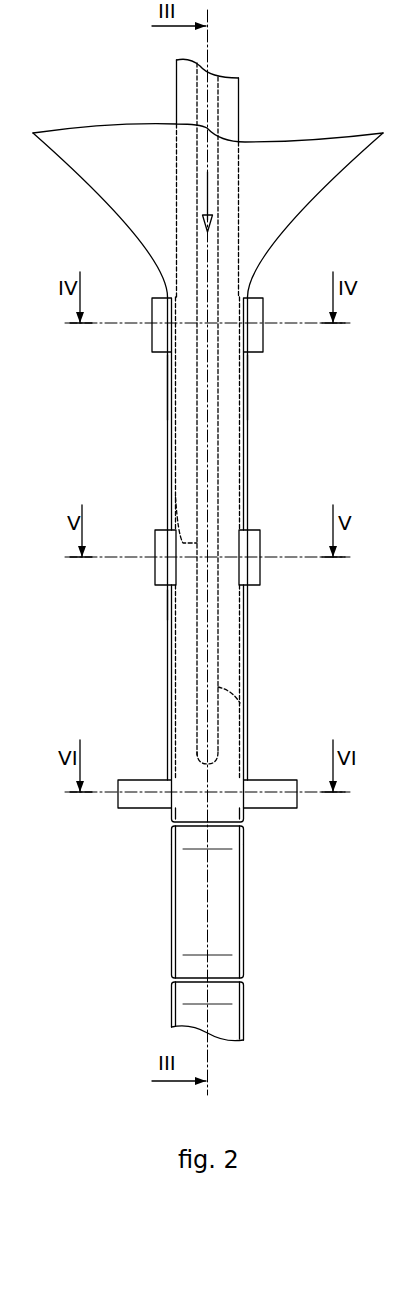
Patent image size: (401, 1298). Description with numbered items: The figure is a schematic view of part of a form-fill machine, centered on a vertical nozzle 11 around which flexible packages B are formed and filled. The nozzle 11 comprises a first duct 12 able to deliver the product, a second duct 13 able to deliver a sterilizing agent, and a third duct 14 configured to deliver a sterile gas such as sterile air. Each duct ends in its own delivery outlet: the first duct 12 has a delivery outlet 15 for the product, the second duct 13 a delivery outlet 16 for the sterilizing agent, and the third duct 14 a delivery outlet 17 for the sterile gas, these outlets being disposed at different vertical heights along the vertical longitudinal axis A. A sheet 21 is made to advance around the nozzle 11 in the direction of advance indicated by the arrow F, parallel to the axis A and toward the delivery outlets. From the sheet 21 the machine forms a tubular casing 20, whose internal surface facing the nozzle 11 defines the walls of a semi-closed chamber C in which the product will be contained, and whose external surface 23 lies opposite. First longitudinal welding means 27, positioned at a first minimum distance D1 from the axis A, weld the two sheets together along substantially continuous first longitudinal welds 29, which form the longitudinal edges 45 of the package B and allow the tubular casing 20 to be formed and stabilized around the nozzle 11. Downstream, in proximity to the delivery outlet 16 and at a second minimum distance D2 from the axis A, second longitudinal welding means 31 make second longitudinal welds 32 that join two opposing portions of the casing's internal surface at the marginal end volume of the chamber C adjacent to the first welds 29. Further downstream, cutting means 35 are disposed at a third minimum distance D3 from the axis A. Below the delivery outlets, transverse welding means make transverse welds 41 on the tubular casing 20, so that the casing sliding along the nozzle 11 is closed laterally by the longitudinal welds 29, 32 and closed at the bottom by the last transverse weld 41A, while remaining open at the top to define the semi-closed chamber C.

The nozzle 11 is at (206, 406).
The first duct 12 is at (205, 108).
The second duct 13 is at (185, 72).
The third duct 14 is at (230, 117).
The delivery outlet 15 is at (220, 752).
The delivery outlet 16 is at (175, 497).
The delivery outlet 17 is at (240, 703).
The tubular casing 20 is at (167, 608).
The sheet 21 is at (208, 210).
The external surface 23 is at (277, 215).
The first longitudinal welding means 27 is at (151, 356).
The first longitudinal weld 29 is at (208, 538).
The second longitudinal welding means 31 is at (153, 529).
The second longitudinal weld 32 is at (243, 640).
The cutting means 35 is at (116, 810).
The transverse weld 41 is at (222, 979).
The last transverse weld 41A is at (222, 827).
The longitudinal edge 45 is at (168, 405).
The longitudinal axis A is at (218, 612).
The flexible package B is at (188, 935).
The semi-closed chamber C is at (185, 637).
The direction of advance F is at (205, 178).
The first minimum distance D1 is at (207, 318).
The second minimum distance D2 is at (207, 577).
The third minimum distance D3 is at (207, 785).